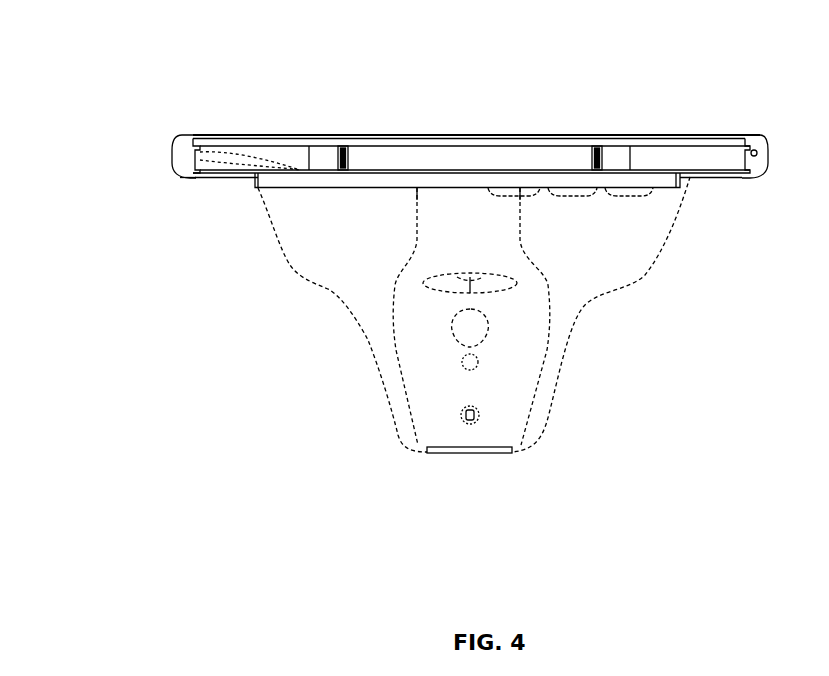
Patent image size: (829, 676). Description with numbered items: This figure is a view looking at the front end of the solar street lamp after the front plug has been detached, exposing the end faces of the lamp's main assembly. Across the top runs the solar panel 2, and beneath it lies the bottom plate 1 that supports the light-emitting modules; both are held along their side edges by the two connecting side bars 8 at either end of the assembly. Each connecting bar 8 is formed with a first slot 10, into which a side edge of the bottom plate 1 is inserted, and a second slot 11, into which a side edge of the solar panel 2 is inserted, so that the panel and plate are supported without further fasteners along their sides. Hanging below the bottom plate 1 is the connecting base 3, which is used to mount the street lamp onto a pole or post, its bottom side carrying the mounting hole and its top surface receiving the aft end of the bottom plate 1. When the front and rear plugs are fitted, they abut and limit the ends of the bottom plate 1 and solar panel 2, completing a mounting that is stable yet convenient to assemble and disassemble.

The bottom plate 1 is at (550, 172).
The solar panel 2 is at (452, 143).
The connecting base 3 is at (388, 355).
The connecting side bar 8 is at (300, 170).
The first slot 10 is at (193, 177).
The second slot 11 is at (180, 130).